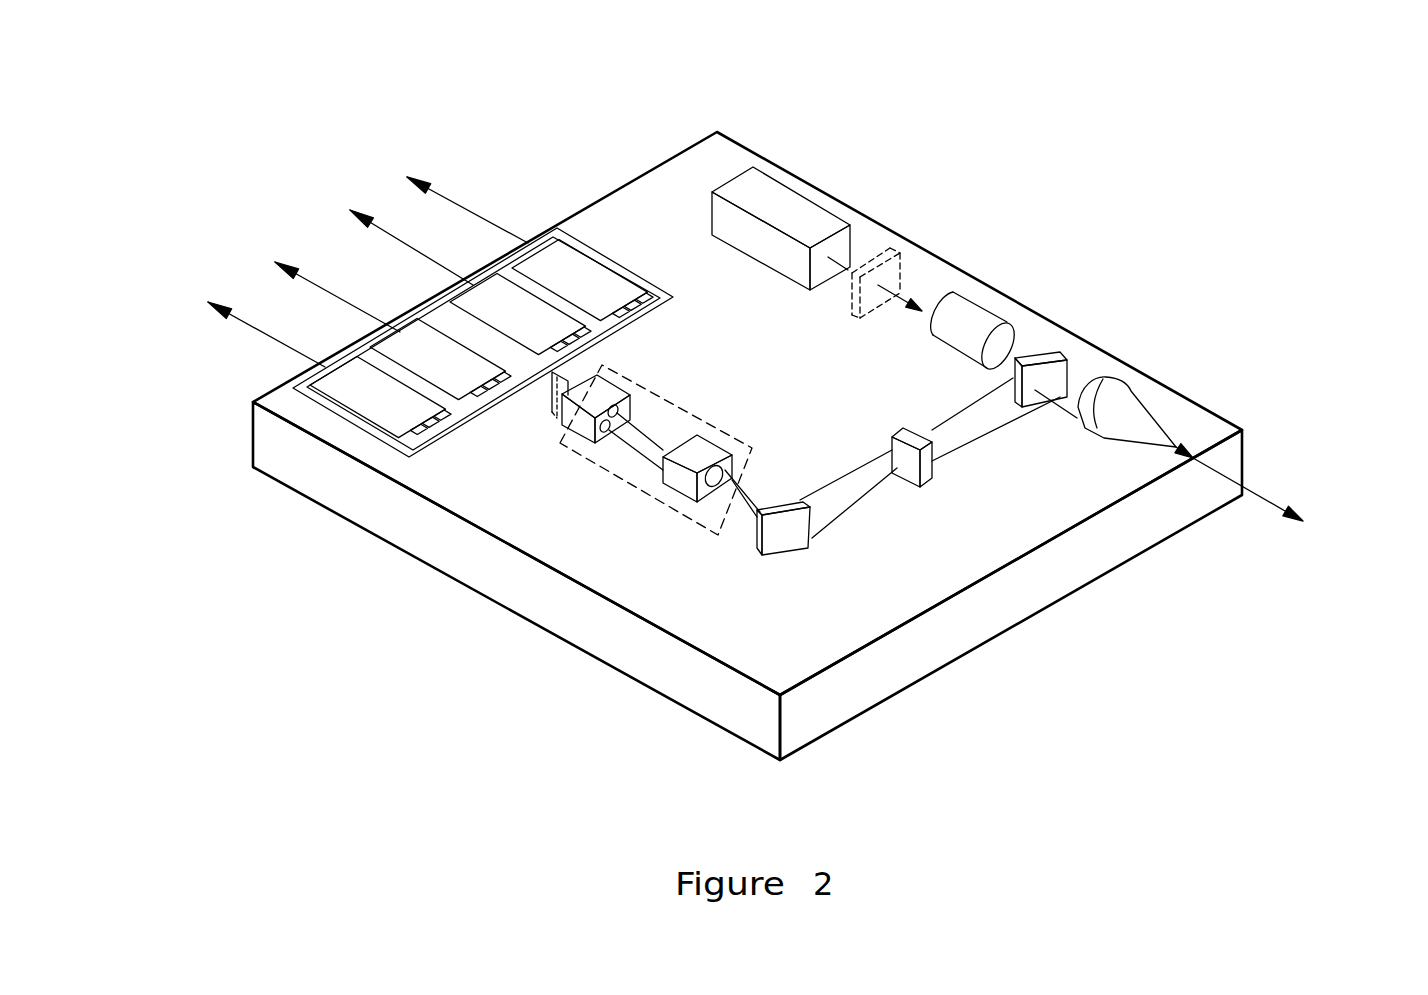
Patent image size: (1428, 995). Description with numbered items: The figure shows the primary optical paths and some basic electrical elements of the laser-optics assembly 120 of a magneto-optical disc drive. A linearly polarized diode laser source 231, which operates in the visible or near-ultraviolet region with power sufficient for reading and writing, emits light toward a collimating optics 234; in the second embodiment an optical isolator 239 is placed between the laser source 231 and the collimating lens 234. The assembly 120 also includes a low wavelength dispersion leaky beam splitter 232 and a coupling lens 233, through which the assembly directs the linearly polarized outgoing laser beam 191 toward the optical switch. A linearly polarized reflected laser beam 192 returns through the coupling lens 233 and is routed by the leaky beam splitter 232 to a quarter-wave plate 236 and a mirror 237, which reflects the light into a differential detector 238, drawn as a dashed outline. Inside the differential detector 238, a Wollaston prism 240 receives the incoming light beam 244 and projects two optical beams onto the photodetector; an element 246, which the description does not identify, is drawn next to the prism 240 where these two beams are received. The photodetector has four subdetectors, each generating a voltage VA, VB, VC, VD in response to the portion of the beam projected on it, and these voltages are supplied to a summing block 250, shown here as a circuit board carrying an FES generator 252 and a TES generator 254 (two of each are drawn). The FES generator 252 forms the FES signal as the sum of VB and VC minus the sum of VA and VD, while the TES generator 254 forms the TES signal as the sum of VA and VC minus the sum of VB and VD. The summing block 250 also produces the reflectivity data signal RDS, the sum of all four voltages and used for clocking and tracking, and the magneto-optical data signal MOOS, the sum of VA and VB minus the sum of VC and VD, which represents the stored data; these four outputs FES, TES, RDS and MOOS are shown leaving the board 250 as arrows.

The laser-optics assembly 120 is at (432, 103).
The linearly polarized diode laser source 231 is at (822, 201).
The optical isolator 239 is at (905, 262).
The collimating optics 234 is at (955, 292).
The low wavelength dispersion leaky beam splitter 232 is at (1057, 357).
The coupling lens 233 is at (1142, 400).
The incident light beam 191 is at (1300, 507).
The linearly polarized reflected laser beam 192 is at (1203, 437).
The summing block 250 is at (653, 283).
The FES generator 252 is at (511, 320).
The TES generator 254 is at (450, 356).
The photodetector 246 is at (623, 383).
The Wollaston prism 240 is at (707, 420).
The incoming light beam 244 is at (760, 492).
The quarter-wave plate 236 is at (922, 490).
The mirror 237 is at (793, 550).
The differential detector 238 is at (667, 507).
The subdetector A voltage VA is at (568, 378).
The subdetector B voltage VB is at (555, 392).
The subdetector C voltage VC is at (555, 403).
The subdetector D voltage VD is at (556, 400).
The FES signal FES is at (441, 195).
The TES signal TES is at (385, 233).
The reflectivity data signal RDS is at (312, 281).
The magneto-optical data signal MOOS is at (241, 320).